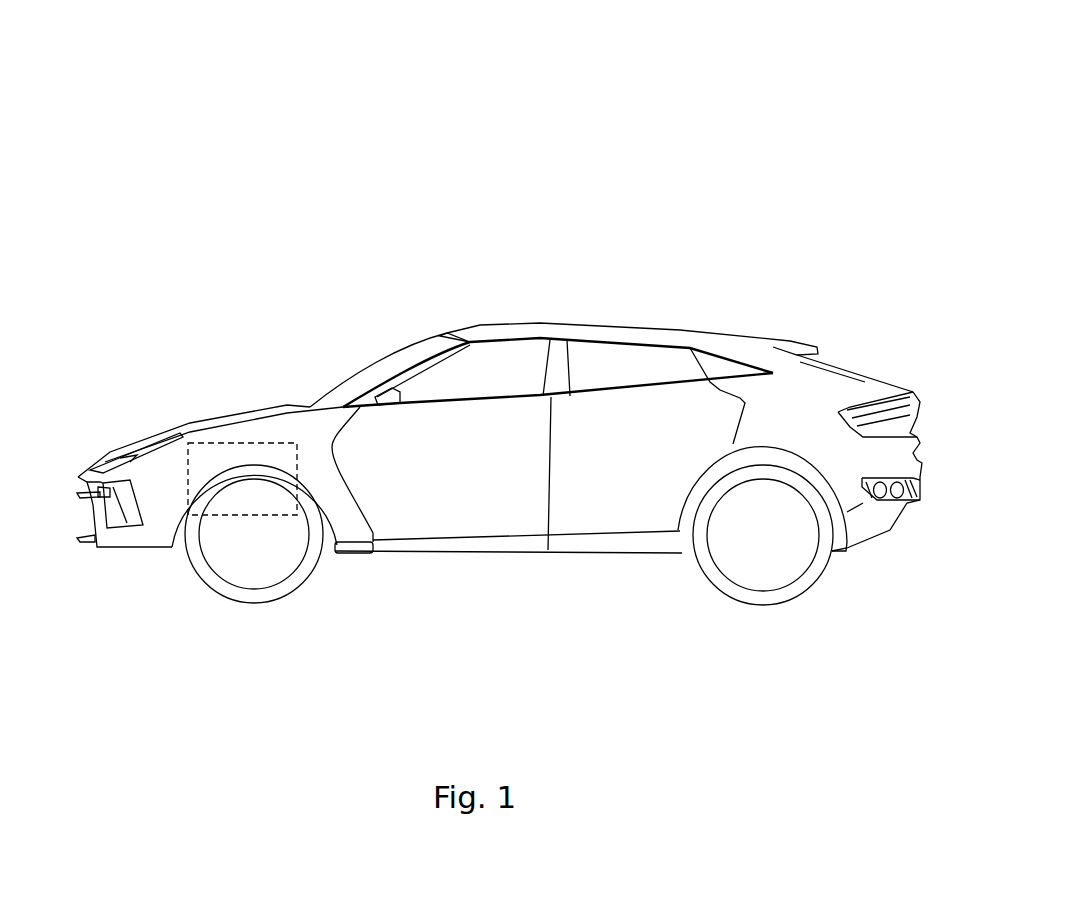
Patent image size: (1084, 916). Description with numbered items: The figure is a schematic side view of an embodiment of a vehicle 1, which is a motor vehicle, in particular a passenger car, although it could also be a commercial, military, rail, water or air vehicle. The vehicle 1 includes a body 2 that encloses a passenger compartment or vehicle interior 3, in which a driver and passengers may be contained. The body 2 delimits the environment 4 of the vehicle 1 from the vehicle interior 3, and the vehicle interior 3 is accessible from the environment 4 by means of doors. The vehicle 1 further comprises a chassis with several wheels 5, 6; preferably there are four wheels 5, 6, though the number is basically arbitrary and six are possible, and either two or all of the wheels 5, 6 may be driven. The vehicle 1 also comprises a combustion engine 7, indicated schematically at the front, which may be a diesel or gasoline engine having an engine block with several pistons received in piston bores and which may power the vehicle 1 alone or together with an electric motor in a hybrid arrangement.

The vehicle 1 is at (493, 88).
The body 2 is at (624, 324).
The vehicle interior 3 is at (492, 386).
The environment 4 is at (778, 175).
The wheel 5 is at (257, 603).
The wheel 6 is at (752, 605).
The combustion engine 7 is at (219, 443).